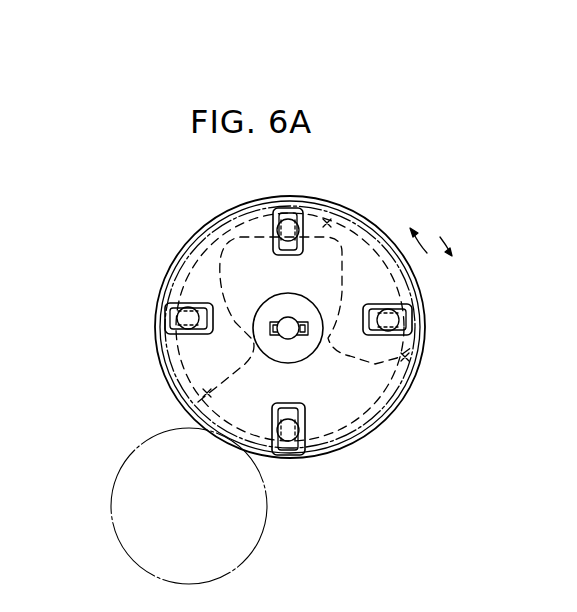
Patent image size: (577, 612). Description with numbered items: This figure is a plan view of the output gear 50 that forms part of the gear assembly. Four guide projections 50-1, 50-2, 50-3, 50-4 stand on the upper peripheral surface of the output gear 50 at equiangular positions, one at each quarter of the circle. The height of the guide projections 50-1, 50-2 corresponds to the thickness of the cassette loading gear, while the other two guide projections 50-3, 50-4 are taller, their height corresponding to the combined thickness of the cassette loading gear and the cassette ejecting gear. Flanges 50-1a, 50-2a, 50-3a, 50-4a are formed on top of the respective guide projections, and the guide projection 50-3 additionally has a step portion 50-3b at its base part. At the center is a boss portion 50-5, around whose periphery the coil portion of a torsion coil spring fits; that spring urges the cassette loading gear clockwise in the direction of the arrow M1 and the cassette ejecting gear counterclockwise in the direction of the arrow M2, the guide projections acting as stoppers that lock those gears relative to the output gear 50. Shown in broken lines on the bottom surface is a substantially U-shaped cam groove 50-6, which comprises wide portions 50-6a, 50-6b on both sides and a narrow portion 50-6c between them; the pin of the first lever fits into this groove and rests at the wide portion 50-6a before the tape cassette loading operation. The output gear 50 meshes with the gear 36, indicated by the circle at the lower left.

The output gear 50 is at (391, 162).
The guide projection 50-1 is at (173, 327).
The flange 50-1a is at (178, 316).
The guide projection 50-2 is at (282, 230).
The flange 50-2a is at (282, 215).
The guide projection 50-3 is at (395, 304).
The flange 50-3a is at (403, 325).
The step portion 50-3b is at (400, 337).
The guide projection 50-4 is at (300, 428).
The flange 50-4a is at (303, 450).
The boss portion 50-5 is at (281, 358).
The cam groove 50-6 is at (200, 257).
The wide portion 50-6a is at (204, 394).
The wide portion 50-6b is at (406, 358).
The narrow portion 50-6c is at (328, 223).
The arrow M1 is at (432, 235).
The arrow M2 is at (437, 259).
The gear 36 is at (260, 513).